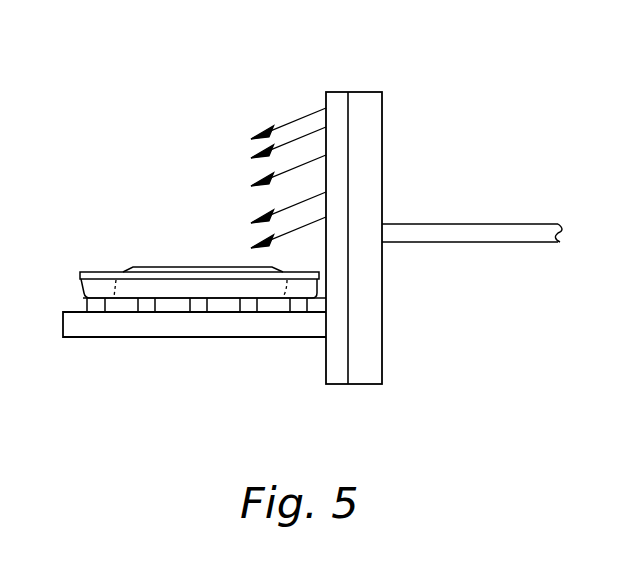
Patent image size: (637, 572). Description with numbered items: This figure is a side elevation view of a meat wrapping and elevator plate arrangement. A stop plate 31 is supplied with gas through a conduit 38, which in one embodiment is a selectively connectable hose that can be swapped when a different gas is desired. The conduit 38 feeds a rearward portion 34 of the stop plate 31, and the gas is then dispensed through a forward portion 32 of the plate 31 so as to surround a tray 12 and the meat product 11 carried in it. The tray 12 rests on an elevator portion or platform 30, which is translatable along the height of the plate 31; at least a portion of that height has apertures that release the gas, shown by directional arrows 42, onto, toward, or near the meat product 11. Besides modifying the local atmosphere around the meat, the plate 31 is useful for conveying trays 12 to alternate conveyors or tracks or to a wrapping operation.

The meat product 11 is at (200, 272).
The tray 12 is at (85, 289).
The elevator portion or platform 30 is at (128, 325).
The stop plate 31 is at (420, 318).
The forward portion 32 is at (334, 367).
The rearward portion 34 is at (372, 117).
The conduit 38 is at (508, 230).
The directional arrows 42 is at (302, 112).